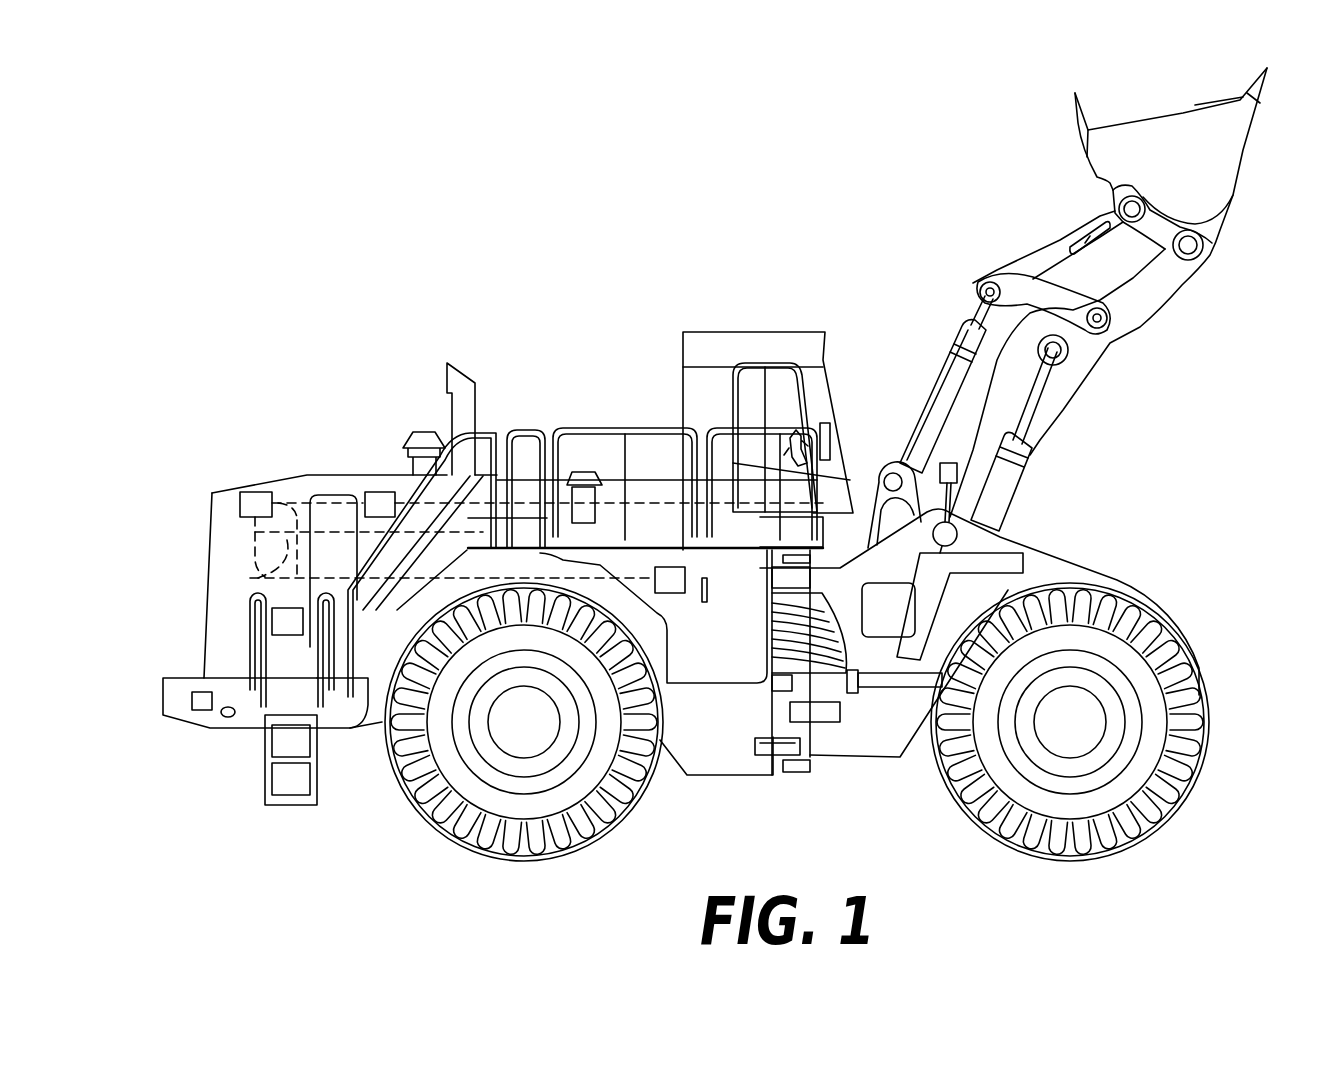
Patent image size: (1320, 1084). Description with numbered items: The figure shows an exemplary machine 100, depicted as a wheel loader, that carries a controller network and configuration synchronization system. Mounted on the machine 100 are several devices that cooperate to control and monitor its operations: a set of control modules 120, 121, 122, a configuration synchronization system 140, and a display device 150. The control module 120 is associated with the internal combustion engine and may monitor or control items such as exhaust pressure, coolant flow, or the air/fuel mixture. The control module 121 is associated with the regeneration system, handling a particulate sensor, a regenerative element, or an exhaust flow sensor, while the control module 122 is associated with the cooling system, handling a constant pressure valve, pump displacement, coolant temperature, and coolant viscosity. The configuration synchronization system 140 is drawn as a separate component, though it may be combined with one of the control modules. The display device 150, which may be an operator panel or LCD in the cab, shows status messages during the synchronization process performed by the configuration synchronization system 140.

The machine 100 is at (764, 294).
The control module 120 is at (272, 620).
The control module 121 is at (380, 492).
The control module 122 is at (668, 593).
The configuration synchronization system 140 is at (256, 492).
The display device 150 is at (832, 447).